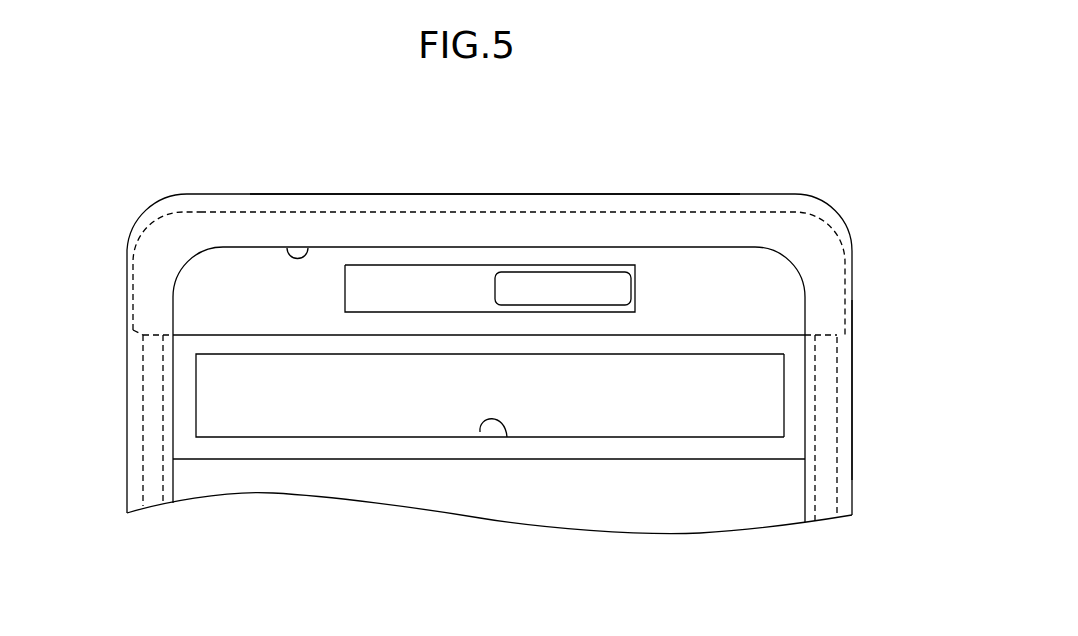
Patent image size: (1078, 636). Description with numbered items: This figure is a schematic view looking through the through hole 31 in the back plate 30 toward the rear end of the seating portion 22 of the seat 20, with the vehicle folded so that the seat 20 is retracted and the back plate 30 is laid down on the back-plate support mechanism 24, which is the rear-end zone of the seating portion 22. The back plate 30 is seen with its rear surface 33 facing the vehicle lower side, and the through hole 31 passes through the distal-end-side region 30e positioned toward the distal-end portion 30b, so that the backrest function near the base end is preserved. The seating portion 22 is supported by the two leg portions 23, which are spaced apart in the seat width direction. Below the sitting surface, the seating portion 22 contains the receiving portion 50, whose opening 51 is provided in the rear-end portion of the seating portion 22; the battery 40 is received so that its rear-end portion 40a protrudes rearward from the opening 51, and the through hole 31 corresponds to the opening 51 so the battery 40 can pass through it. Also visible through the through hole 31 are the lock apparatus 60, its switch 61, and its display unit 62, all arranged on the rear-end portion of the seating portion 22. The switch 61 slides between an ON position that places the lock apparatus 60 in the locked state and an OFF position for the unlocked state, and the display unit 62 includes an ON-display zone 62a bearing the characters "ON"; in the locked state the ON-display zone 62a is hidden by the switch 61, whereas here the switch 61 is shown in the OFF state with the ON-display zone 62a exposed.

The seat 20 is at (202, 298).
The seating portion 22 is at (252, 277).
The leg portions 23 is at (152, 473).
The back-plate support mechanism 24 is at (505, 228).
The back plate 30 is at (809, 194).
The distal-end portion 30b is at (702, 194).
The distal-end-side region 30e is at (853, 337).
The through hole 31 is at (287, 248).
The rear surface 33 is at (157, 282).
The battery 40 is at (615, 400).
The rear-end portion 40a is at (660, 397).
The receiving portion 50 is at (412, 459).
The opening 51 is at (507, 437).
The lock apparatus 60 is at (548, 264).
The switch 61 is at (603, 280).
The display unit 62 is at (453, 292).
The ON-display zone 62a is at (407, 273).